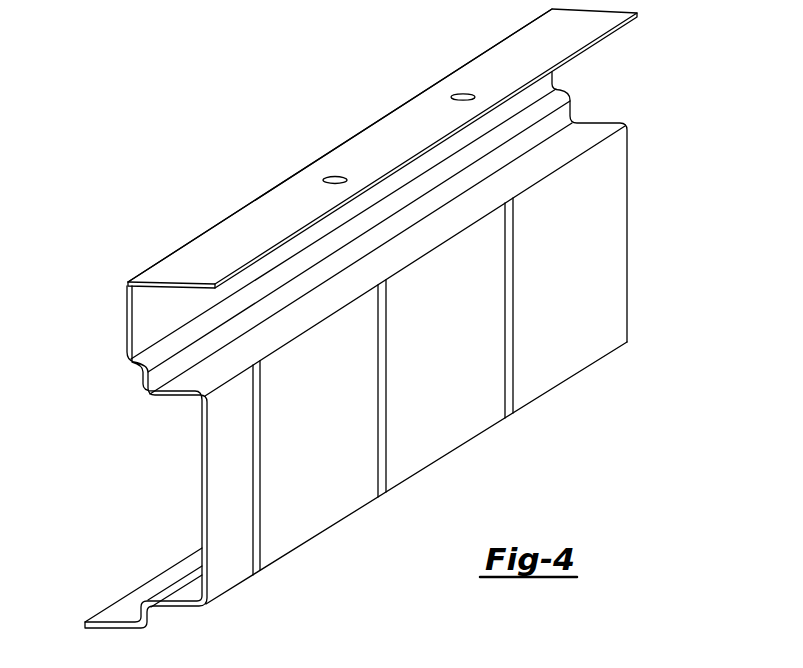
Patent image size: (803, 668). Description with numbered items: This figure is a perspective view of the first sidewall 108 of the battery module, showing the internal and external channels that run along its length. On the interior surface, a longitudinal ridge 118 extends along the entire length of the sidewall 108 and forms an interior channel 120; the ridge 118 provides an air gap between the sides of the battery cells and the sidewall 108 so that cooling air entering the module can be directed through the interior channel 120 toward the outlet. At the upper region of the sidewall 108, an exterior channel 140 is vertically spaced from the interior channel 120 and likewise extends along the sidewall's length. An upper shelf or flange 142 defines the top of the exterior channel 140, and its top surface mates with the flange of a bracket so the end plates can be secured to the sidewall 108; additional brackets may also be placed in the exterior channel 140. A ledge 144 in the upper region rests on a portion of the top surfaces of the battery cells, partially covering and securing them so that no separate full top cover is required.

The first sidewall 108 is at (124, 177).
The ridge 118 is at (322, 495).
The interior channel 120 is at (164, 517).
The exterior channel 140 is at (581, 70).
The upper flange 142 is at (360, 157).
The ledge 144 is at (128, 360).